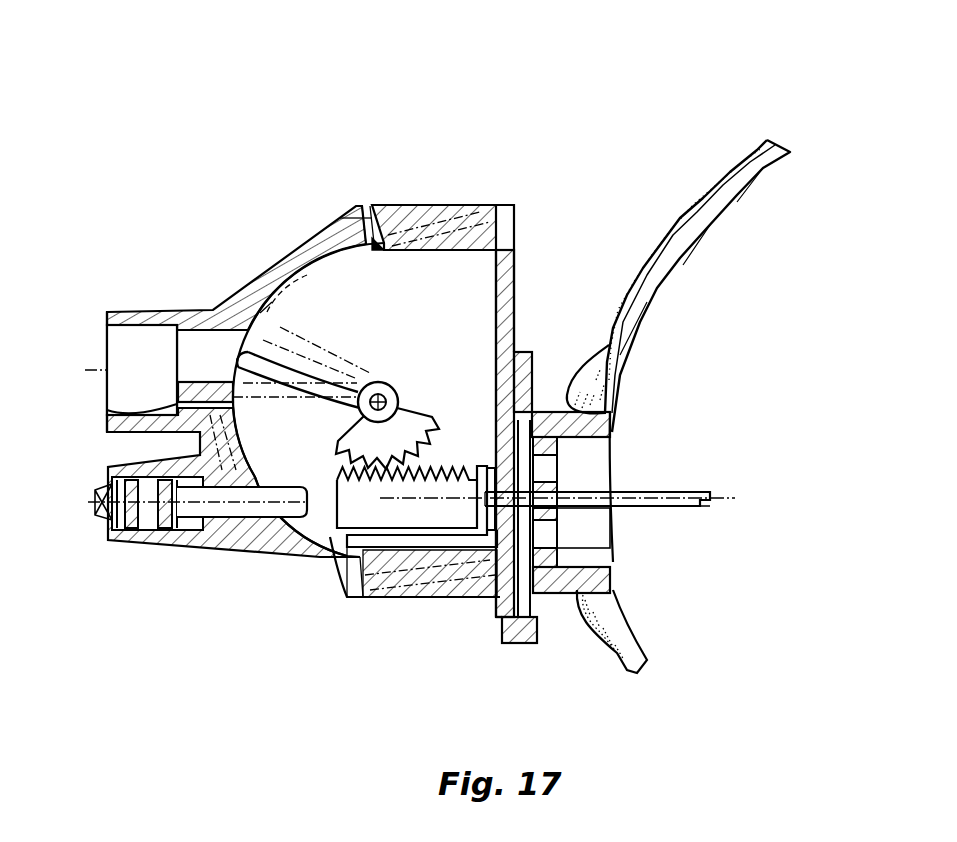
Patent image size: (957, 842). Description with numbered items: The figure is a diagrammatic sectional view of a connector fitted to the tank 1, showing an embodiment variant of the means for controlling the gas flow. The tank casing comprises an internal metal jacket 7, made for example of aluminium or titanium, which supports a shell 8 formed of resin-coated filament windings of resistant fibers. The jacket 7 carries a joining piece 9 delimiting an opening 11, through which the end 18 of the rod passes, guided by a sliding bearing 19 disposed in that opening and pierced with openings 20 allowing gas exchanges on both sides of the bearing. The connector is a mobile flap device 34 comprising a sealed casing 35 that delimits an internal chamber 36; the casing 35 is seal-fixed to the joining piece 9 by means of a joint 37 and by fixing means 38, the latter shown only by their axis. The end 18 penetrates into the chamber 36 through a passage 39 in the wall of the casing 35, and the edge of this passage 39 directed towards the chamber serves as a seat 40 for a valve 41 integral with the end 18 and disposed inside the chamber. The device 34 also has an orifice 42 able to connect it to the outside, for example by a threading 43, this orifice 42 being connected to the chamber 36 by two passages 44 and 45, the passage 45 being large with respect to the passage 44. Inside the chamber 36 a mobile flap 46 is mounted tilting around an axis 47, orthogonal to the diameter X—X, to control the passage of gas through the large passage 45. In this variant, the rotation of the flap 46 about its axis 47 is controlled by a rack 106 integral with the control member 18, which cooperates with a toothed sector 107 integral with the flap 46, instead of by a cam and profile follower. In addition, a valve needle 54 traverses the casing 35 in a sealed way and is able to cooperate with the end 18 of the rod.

The tank 1 is at (745, 130).
The internal jacket 7 is at (745, 186).
The shell 8 is at (710, 190).
The joining piece 9 is at (610, 412).
The opening 11 is at (583, 540).
The end of the rod 18 is at (690, 510).
The sliding bearing 19 is at (550, 490).
The openings 20 is at (547, 468).
The mobile flap device 34 is at (330, 206).
The sealed casing 35 is at (397, 210).
The internal chamber 36 is at (460, 265).
The joint 37 is at (535, 585).
The fixing means 38 is at (505, 618).
The passage 39 is at (538, 415).
The seat 40 is at (490, 545).
The valve 41 is at (480, 545).
The orifice 42 is at (118, 362).
The threading 43 is at (130, 310).
The passage 44 is at (135, 408).
The passage 45 is at (212, 340).
The mobile flap 46 is at (268, 334).
The axis 47 is at (378, 392).
The valve needle 54 is at (218, 510).
The rack 106 is at (347, 578).
The toothed sector 107 is at (415, 410).